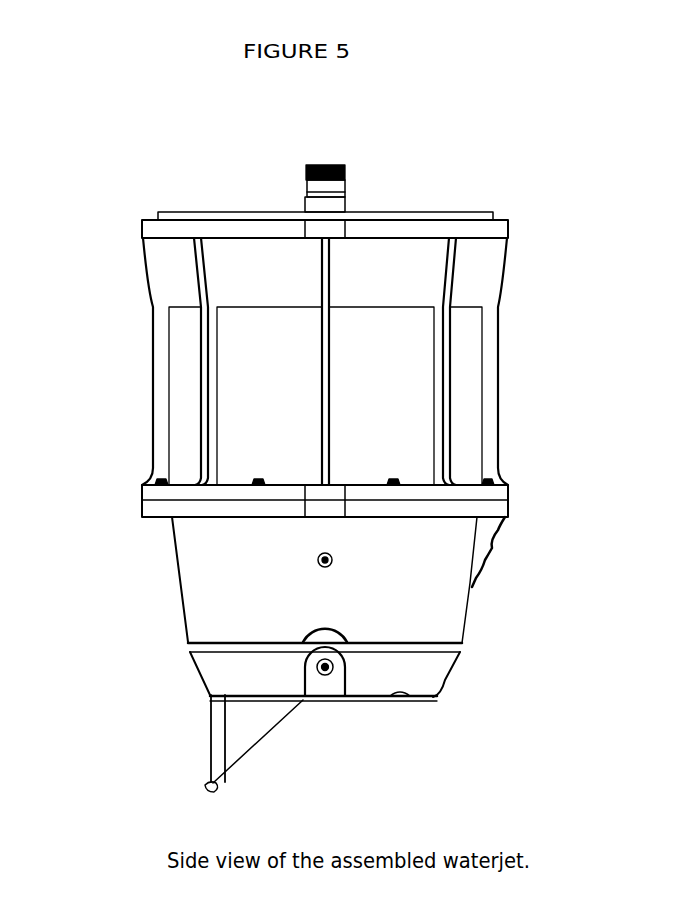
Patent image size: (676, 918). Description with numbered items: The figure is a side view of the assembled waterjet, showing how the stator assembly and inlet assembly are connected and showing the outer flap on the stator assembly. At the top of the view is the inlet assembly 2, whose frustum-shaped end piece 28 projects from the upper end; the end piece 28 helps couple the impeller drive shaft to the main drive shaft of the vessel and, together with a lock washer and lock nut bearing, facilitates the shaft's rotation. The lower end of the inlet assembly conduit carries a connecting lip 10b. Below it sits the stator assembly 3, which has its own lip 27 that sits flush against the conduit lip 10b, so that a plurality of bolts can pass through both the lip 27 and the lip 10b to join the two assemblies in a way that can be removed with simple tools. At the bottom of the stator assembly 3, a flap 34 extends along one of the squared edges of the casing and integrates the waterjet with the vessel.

The end piece 28 is at (302, 165).
The inlet assembly 2 is at (490, 391).
The lip 10b is at (487, 495).
The stator assembly 3 is at (181, 597).
The lip 27 is at (495, 512).
The flap 34 is at (212, 736).